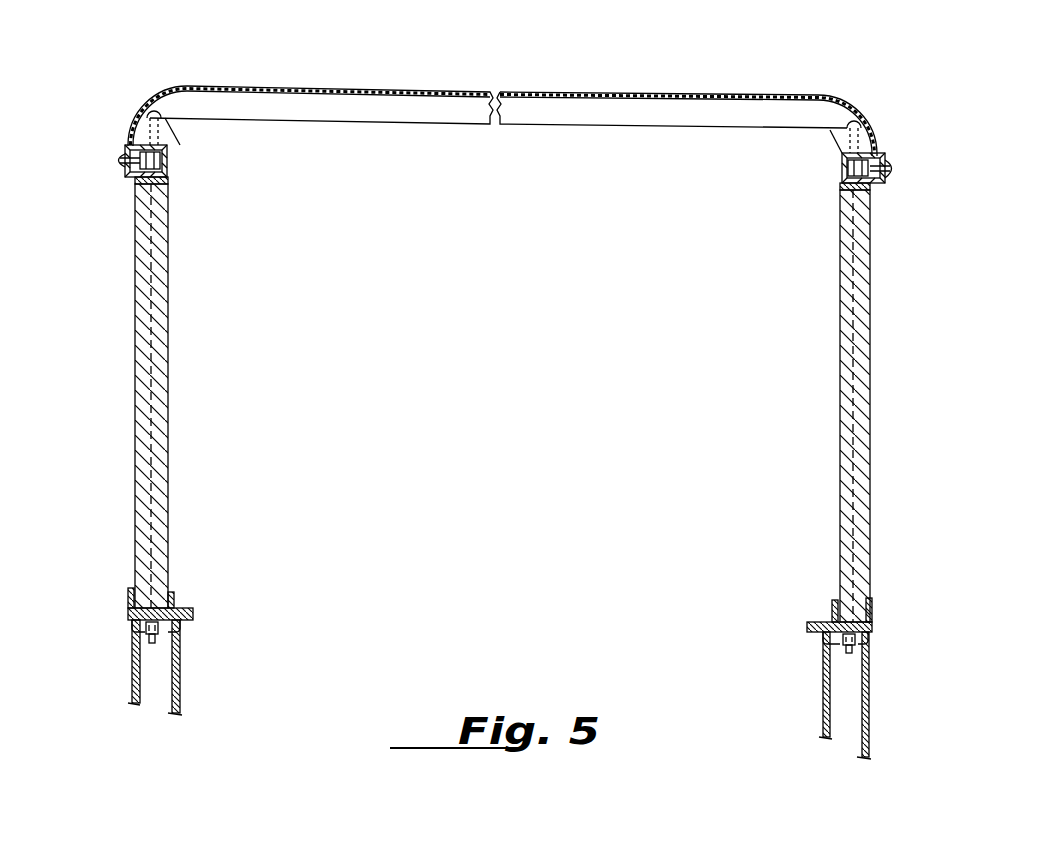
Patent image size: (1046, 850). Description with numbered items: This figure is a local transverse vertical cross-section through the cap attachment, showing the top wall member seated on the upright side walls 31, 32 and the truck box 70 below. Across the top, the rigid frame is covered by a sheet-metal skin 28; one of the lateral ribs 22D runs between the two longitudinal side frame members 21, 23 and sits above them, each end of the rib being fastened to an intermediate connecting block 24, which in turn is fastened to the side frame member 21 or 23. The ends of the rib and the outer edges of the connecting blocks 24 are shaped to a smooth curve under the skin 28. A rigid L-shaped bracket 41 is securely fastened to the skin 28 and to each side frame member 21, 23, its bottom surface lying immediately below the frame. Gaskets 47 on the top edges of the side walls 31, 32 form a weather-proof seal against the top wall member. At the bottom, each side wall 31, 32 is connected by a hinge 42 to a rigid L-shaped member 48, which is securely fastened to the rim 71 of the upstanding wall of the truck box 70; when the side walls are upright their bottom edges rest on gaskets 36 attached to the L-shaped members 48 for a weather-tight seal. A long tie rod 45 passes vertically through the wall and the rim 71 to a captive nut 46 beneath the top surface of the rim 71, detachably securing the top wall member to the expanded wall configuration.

The skin 28 is at (648, 93).
The lateral rib 22D is at (598, 117).
The intermediate connecting block 24 is at (178, 128).
The side frame member 21 is at (170, 165).
The side frame member 23 is at (842, 168).
The L-shaped bracket 41 is at (882, 157).
The gasket 47 is at (170, 184).
The side wall 31 is at (168, 475).
The side wall 32 is at (842, 300).
The tie rod 45 is at (160, 410).
The gasket 36 is at (163, 604).
The L-shaped member 48 is at (130, 605).
The hinge 42 is at (173, 604).
The rim 71 is at (178, 634).
The captive nut 46 is at (150, 632).
The truck box 70 is at (178, 684).